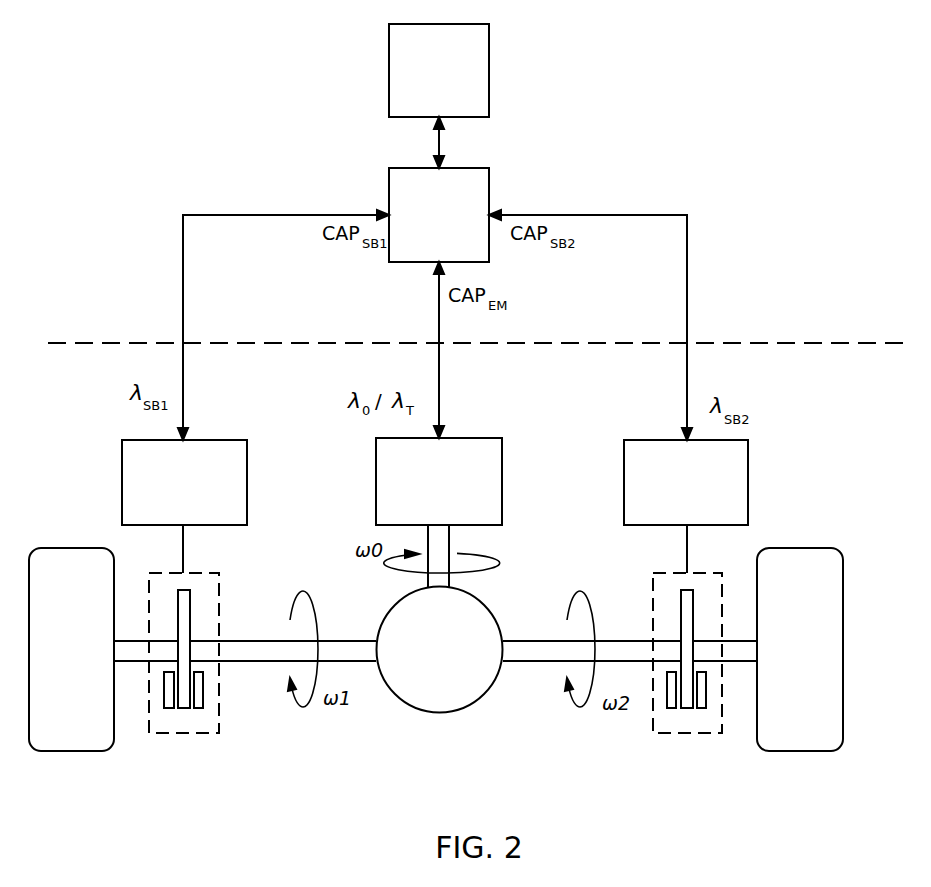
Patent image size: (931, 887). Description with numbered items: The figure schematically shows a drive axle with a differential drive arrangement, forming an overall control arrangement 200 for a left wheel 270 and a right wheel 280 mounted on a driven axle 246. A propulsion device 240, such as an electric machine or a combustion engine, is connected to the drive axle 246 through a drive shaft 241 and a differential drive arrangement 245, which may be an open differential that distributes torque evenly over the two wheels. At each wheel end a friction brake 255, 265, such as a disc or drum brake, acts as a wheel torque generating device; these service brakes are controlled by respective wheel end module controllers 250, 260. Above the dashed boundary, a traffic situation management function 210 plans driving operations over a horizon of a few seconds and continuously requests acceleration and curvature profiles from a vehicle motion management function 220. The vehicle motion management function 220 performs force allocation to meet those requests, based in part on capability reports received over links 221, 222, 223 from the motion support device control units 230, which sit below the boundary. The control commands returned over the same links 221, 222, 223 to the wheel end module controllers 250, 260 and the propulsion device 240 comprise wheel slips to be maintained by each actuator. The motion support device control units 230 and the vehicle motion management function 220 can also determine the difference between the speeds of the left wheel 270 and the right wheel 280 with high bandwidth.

The vehicle powertrain system 200 is at (82, 213).
The traffic situation management (TSM) function 210 is at (439, 70).
The vehicle motion management (VMM) function 220 is at (439, 215).
The communication link to first wheel end module 221 is at (283, 314).
The communication link to second wheel end module 222 is at (590, 314).
The communication link to electric machine / combustion engine 223 is at (457, 350).
The MSD control units 230 is at (475, 358).
The propulsion device 240 is at (439, 481).
The drive shaft 241 is at (443, 542).
The differential drive arrangement 245 is at (440, 650).
The driven axle 246 is at (265, 650).
The wheel end module (WEM) controller 250 is at (184, 506).
The friction brake 255 is at (206, 734).
The wheel end module (WEM) controller 260 is at (686, 506).
The friction brake 265 is at (670, 733).
The left wheel 270 is at (68, 548).
The right wheel 280 is at (802, 548).